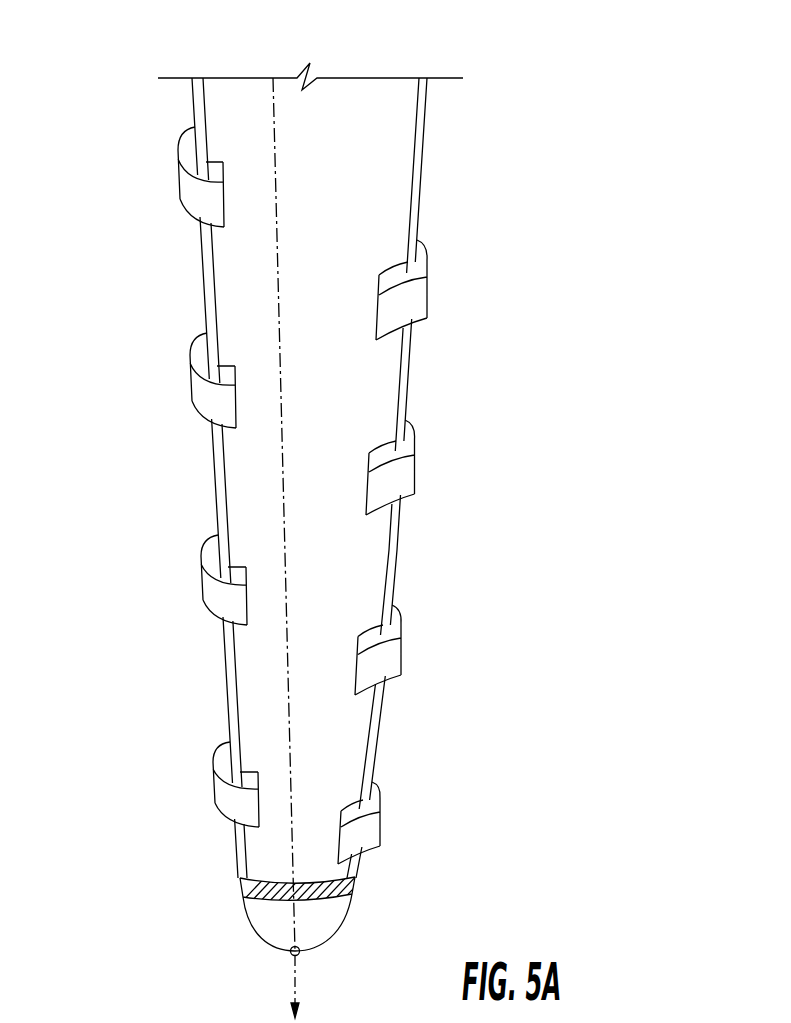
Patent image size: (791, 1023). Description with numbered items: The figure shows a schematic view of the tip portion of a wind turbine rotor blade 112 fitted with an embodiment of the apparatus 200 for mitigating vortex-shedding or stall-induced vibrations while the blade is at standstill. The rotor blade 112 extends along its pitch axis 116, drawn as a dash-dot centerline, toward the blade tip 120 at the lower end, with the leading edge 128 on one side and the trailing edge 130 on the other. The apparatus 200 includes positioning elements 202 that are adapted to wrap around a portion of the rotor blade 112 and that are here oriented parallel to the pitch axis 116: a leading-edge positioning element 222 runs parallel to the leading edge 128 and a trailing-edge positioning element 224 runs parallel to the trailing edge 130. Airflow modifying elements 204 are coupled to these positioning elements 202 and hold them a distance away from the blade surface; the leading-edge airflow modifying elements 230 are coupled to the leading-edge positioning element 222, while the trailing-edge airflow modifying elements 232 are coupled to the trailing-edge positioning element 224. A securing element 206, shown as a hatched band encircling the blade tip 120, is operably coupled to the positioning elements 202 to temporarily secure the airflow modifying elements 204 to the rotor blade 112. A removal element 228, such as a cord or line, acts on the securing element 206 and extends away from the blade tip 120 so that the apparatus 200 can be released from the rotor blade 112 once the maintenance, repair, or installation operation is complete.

The apparatus 200 is at (590, 81).
The rotor blade 112 is at (301, 454).
The pitch axis 116 is at (273, 127).
The leading edge 128 is at (192, 102).
The trailing edge 130 is at (423, 165).
The positioning element 202 is at (297, 376).
The leading-edge positioning element 222 is at (214, 308).
The trailing-edge positioning element 224 is at (413, 373).
The airflow modifying element 204 is at (321, 728).
The leading-edge airflow modifying element 230 is at (212, 786).
The trailing-edge airflow modifying element 232 is at (400, 647).
The securing element 206 is at (363, 884).
The blade tip 120 is at (332, 939).
The removal element 228 is at (276, 893).